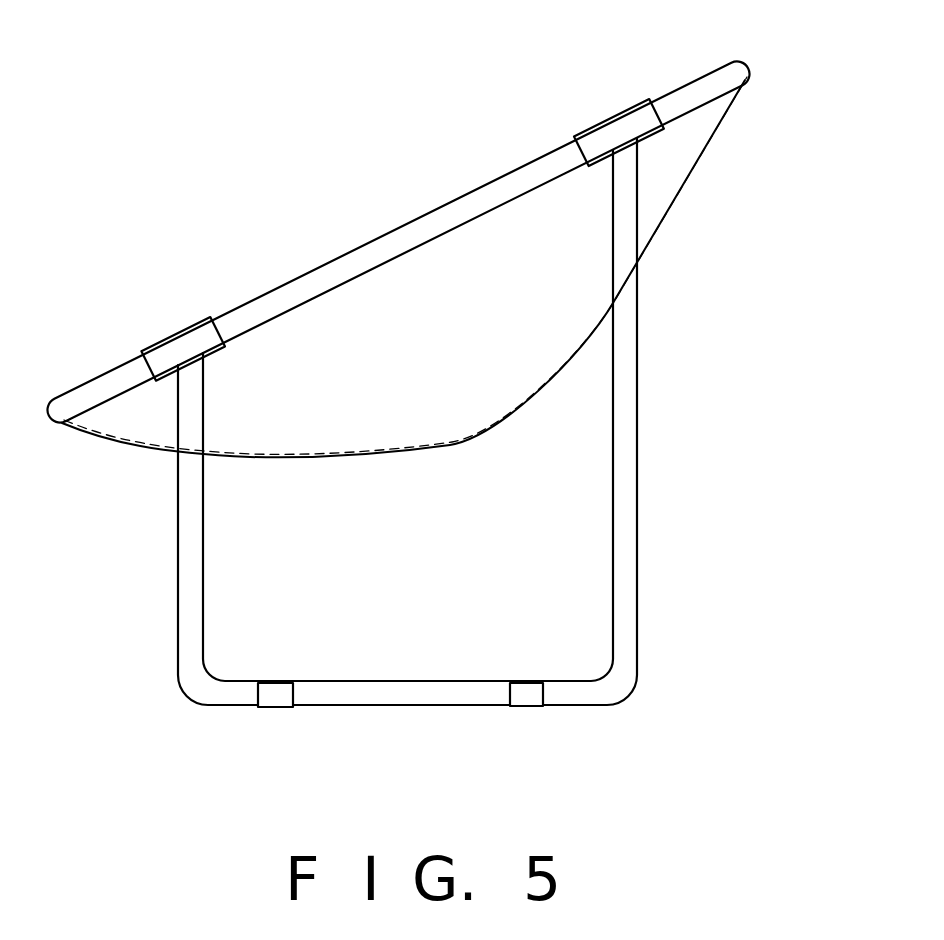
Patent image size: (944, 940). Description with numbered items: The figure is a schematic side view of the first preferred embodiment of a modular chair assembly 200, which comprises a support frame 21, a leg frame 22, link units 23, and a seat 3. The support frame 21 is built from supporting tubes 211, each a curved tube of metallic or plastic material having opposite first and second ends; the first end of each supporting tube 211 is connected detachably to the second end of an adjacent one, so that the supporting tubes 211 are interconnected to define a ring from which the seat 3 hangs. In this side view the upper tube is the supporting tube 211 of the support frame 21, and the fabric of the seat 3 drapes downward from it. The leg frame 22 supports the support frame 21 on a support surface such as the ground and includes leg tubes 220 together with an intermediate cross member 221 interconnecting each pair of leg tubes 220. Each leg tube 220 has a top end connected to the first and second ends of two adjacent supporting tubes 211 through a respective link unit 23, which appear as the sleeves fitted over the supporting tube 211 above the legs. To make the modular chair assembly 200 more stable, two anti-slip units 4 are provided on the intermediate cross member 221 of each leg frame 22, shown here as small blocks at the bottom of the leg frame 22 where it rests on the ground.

The modular chair assembly 200 is at (460, 395).
The support frame 21 is at (398, 222).
The supporting tube 211 is at (477, 203).
The link unit 23 is at (622, 120).
The seat 3 is at (450, 445).
The leg frame 22 is at (411, 453).
The leg tube 220 is at (178, 527).
The intermediate cross member 221 is at (446, 697).
The anti-slip unit 4 is at (277, 688).